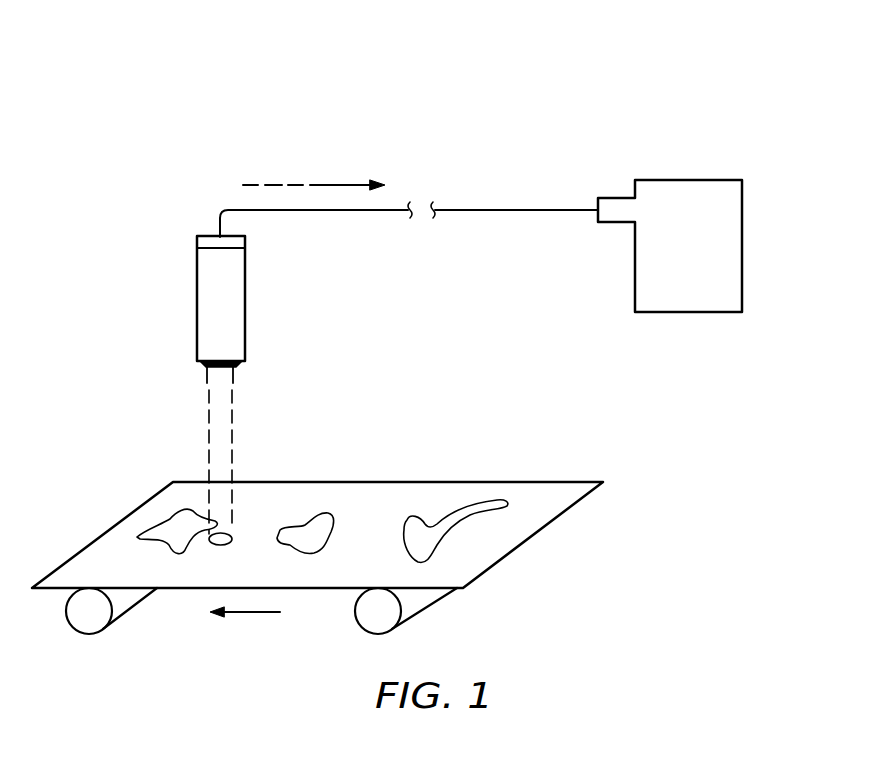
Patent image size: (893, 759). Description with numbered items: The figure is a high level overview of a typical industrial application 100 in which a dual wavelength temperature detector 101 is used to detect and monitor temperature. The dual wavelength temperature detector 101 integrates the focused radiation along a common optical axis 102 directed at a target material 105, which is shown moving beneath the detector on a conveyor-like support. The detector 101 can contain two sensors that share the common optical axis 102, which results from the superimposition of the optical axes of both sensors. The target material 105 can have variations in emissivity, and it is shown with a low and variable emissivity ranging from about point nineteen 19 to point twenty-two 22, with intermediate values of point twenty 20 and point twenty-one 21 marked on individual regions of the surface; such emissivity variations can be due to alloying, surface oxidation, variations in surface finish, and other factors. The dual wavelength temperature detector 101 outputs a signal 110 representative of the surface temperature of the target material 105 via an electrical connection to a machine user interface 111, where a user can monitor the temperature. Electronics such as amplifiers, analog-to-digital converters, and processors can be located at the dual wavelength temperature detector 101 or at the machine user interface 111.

The industrial application 100 is at (404, 323).
The dual wavelength temperature detector 101 is at (197, 293).
The common optical axis 102 is at (209, 420).
The target material 105 is at (78, 560).
The signal 110 is at (338, 185).
The machine user interface 111 is at (688, 180).
The emissivity variation region 19 is at (315, 528).
The measurement spot 20 is at (243, 530).
The emissivity variation region 21 is at (432, 528).
The emissivity variation region 22 is at (173, 528).